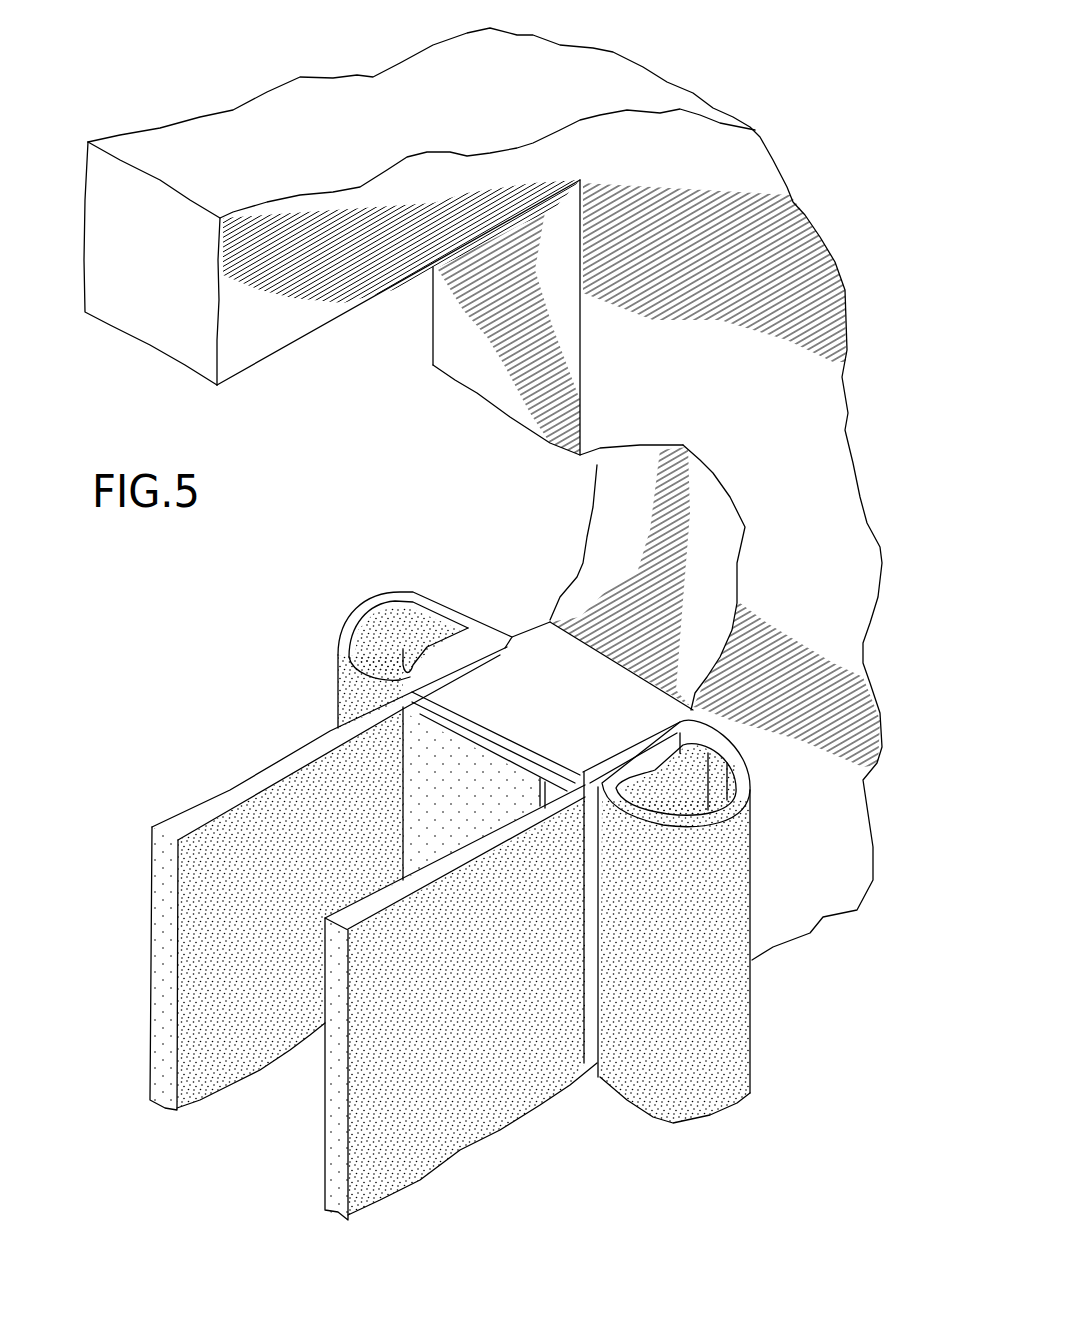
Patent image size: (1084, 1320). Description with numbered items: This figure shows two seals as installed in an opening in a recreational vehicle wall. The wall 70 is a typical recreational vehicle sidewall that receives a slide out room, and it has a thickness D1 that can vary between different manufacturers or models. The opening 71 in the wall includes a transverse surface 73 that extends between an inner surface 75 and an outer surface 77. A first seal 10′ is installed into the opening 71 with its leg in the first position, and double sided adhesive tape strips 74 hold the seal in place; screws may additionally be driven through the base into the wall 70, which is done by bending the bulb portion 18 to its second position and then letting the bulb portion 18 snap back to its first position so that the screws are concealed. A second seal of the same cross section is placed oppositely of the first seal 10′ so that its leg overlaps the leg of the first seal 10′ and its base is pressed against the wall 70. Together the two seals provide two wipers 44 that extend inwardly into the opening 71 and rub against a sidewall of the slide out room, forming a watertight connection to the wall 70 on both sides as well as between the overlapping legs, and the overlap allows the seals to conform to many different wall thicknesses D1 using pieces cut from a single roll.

The wall 70 is at (817, 864).
The opening 71 is at (328, 402).
The inner surface 75 is at (432, 342).
The jamb face 73 is at (487, 382).
The outer surface 77 is at (627, 432).
The thickness D1 is at (670, 712).
The wipers 44 is at (291, 741).
The adhesive tape 74 is at (470, 657).
The first seal 10′ is at (765, 1103).
The bulb portion 18 is at (673, 1108).